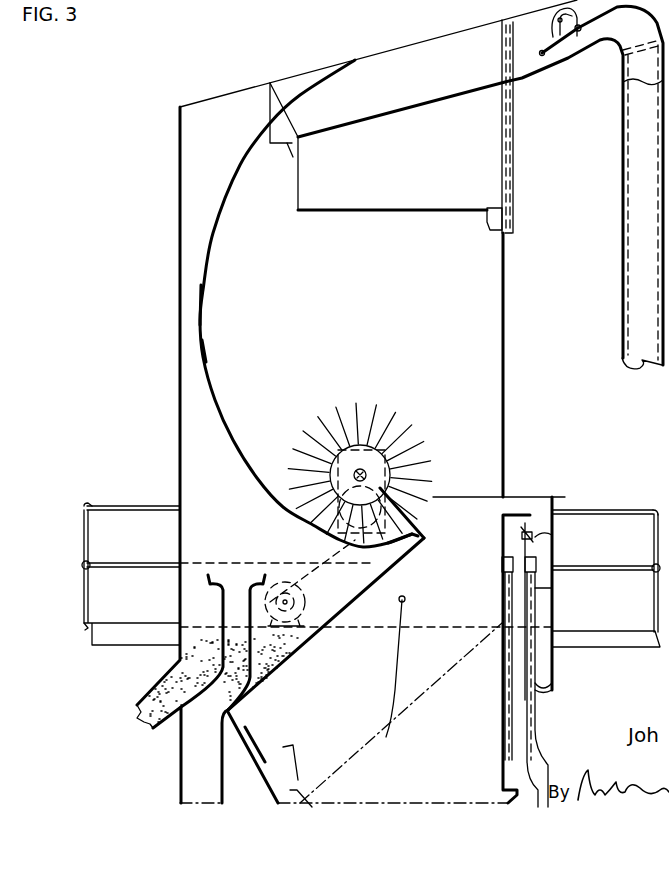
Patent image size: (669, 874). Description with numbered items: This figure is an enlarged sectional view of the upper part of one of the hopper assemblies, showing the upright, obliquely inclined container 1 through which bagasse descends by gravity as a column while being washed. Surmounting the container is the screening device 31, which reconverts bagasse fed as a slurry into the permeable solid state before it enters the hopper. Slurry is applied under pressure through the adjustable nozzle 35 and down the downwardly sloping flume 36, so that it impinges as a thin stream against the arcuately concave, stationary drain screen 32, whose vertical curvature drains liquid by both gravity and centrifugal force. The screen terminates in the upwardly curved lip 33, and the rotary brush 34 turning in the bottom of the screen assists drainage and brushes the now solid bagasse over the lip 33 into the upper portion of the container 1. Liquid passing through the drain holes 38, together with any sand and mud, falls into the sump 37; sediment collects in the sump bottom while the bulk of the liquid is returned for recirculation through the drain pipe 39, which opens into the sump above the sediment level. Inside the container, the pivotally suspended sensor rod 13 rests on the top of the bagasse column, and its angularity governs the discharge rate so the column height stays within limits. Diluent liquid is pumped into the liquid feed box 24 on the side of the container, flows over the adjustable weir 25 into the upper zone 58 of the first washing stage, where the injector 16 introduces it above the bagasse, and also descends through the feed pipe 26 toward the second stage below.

The container 1 is at (260, 787).
The sensor rod 13 is at (397, 660).
The injector 16 is at (515, 505).
The liquid feed box 24 is at (555, 543).
The adjustable weir 25 is at (521, 536).
The feed pipe 26 is at (538, 727).
The screening device 31 is at (224, 238).
The drain screen 32 is at (204, 292).
The lip 33 is at (408, 527).
The rotary brush 34 is at (380, 428).
The nozzle 35 is at (548, 50).
The flume 36 is at (394, 112).
The sump 37 is at (318, 635).
The drain holes 38 is at (206, 358).
The drain pipe 39 is at (222, 612).
The upper zone 58 is at (459, 752).